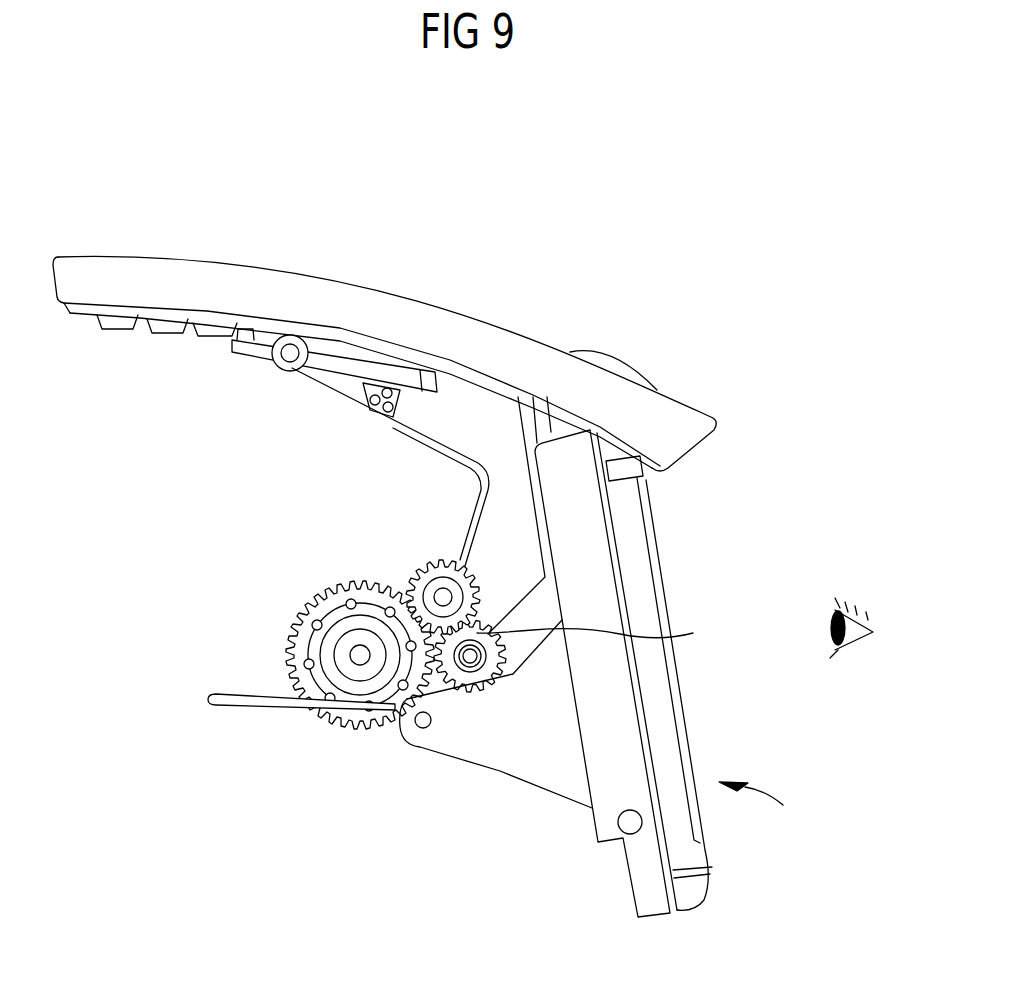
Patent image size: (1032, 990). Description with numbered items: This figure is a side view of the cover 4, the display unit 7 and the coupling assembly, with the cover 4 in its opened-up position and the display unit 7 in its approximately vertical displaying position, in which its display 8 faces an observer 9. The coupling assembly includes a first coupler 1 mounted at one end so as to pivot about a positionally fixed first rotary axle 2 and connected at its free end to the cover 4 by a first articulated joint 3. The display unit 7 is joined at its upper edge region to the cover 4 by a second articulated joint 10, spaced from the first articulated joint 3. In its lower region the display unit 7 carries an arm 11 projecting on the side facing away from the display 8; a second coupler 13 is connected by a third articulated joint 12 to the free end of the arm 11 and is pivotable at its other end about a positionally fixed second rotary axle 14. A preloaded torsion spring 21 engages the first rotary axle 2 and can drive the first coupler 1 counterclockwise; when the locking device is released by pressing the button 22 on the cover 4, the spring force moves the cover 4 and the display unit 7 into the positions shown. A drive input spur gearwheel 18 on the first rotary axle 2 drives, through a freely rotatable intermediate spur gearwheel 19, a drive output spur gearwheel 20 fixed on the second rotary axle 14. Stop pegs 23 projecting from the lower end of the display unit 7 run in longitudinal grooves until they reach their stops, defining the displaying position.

The coupler 1 is at (443, 433).
The first rotary axle 2 is at (352, 655).
The first articulated joint 3 is at (290, 362).
The cover 4 is at (377, 287).
The display unit 7 is at (760, 802).
The display 8 is at (700, 730).
The observer 9 is at (860, 600).
The second articulated joint 10 is at (547, 397).
The arm 11 is at (538, 763).
The third articulated joint 12 is at (413, 722).
The second coupler 13 is at (452, 680).
The second rotary axle 14 is at (475, 670).
The drive input spur gearwheel 18 is at (298, 620).
The intermediate spur gearwheel 19 is at (423, 580).
The drive output spur gearwheel 20 is at (602, 635).
The torsion spring 21 is at (240, 702).
The button 22 is at (620, 357).
The stop pegs 23 is at (628, 828).